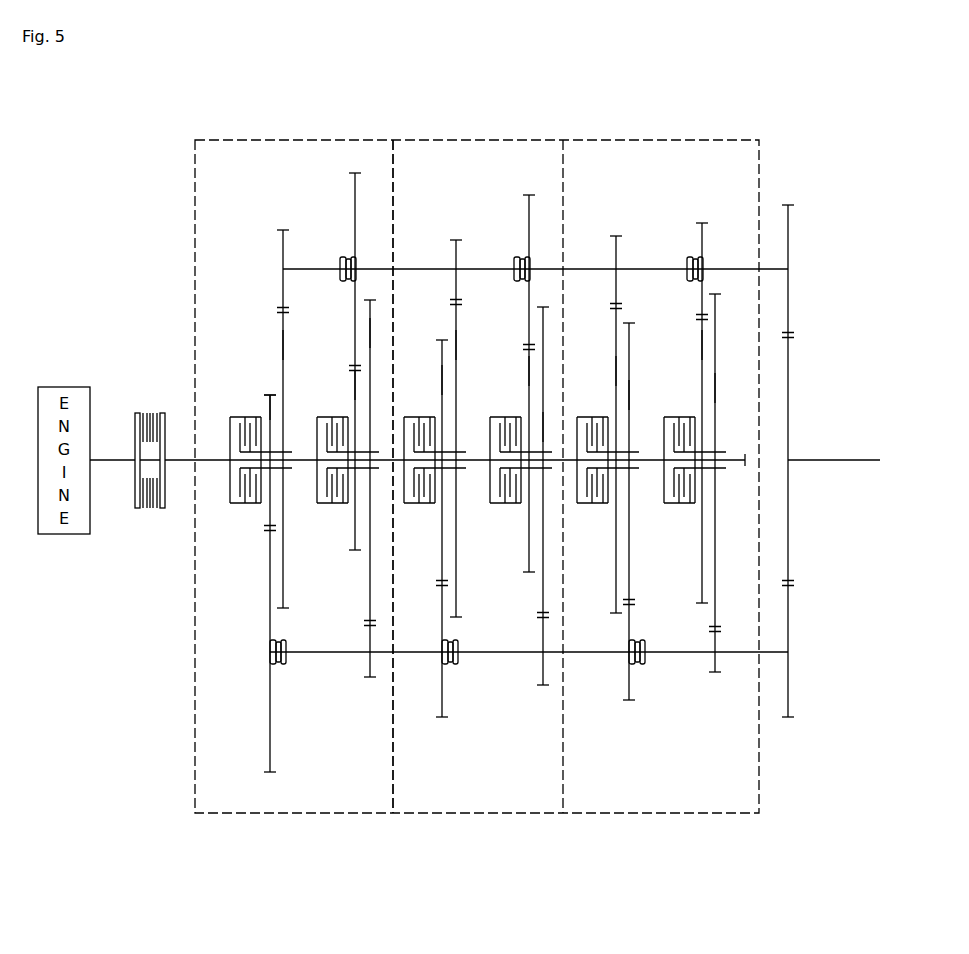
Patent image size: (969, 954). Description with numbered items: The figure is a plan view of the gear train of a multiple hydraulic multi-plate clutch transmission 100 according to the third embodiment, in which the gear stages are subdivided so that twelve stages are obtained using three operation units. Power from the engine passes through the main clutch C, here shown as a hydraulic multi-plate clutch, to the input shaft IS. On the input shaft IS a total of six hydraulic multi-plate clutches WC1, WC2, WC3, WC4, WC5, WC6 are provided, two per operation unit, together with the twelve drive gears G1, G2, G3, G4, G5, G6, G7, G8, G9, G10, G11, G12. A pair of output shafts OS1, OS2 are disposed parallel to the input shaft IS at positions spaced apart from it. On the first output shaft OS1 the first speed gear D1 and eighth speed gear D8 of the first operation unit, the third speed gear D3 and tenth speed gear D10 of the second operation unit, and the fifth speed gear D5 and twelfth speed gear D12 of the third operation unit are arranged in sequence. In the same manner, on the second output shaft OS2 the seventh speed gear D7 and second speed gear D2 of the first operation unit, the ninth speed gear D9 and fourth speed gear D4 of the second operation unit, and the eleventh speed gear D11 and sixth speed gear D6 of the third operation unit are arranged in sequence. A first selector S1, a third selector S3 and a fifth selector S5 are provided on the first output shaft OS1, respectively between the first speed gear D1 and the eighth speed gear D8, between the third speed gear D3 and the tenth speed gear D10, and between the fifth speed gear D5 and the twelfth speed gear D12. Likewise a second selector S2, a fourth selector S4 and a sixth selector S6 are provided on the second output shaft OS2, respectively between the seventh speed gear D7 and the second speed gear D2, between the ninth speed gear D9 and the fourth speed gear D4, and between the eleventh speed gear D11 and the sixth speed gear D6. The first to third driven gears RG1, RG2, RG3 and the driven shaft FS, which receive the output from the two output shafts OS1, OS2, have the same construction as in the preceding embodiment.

The transmission 100 is at (619, 167).
The main clutch C is at (148, 518).
The input shaft IS is at (192, 461).
The hydraulic multi-plate clutch WC1 is at (250, 505).
The hydraulic multi-plate clutch WC2 is at (337, 505).
The hydraulic multi-plate clutch WC3 is at (424, 505).
The hydraulic multi-plate clutch WC4 is at (510, 505).
The hydraulic multi-plate clutch WC5 is at (597, 505).
The hydraulic multi-plate clutch WC6 is at (684, 505).
The drive gear G1 is at (270, 402).
The drive gear G2 is at (355, 383).
The drive gear G3 is at (442, 380).
The drive gear G4 is at (528, 371).
The drive gear G5 is at (630, 394).
The drive gear G6 is at (702, 345).
The drive gear G7 is at (283, 345).
The drive gear G8 is at (372, 333).
The drive gear G9 is at (457, 346).
The drive gear G10 is at (543, 427).
The drive gear G11 is at (616, 371).
The drive gear G12 is at (717, 388).
The first speed gear D1 is at (270, 597).
The second speed gear D2 is at (355, 350).
The third speed gear D3 is at (444, 540).
The fourth speed gear D4 is at (529, 372).
The fifth speed gear D5 is at (630, 522).
The sixth speed gear D6 is at (702, 403).
The seventh speed gear D7 is at (282, 408).
The eighth speed gear D8 is at (371, 500).
The ninth speed gear D9 is at (456, 417).
The tenth speed gear D10 is at (542, 508).
The eleventh speed gear D11 is at (615, 413).
The twelfth speed gear D12 is at (716, 495).
The first selector S1 is at (286, 662).
The second selector S2 is at (341, 258).
The third selector S3 is at (458, 662).
The fourth selector S4 is at (513, 258).
The fifth selector S5 is at (645, 662).
The sixth selector S6 is at (686, 258).
The first output shaft OS1 is at (418, 656).
The second output shaft OS2 is at (420, 266).
The first driven gear RG1 is at (788, 630).
The second driven gear RG2 is at (788, 237).
The third driven gear RG3 is at (788, 413).
The driven shaft FS is at (843, 464).